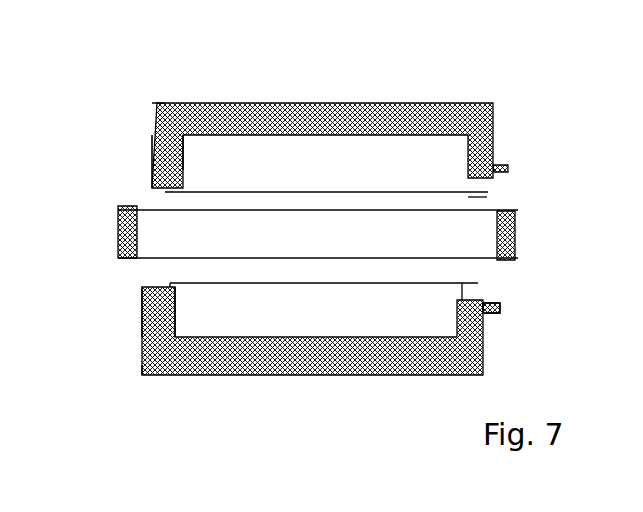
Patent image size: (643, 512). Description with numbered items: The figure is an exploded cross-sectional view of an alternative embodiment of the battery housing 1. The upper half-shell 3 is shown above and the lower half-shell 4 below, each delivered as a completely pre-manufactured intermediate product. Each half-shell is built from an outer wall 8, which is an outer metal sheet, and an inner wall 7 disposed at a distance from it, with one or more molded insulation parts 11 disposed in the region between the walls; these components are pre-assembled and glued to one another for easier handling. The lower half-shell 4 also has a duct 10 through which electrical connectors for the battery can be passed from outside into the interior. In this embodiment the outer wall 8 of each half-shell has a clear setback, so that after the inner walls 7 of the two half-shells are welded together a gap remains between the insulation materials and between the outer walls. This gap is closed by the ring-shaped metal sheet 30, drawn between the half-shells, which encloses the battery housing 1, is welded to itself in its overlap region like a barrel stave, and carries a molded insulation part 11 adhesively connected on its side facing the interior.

The battery housing 1 is at (518, 87).
The upper half-shell 3 is at (418, 104).
The lower half-shell 4 is at (413, 377).
The inner wall 7 is at (155, 172).
The outer wall 8 is at (152, 125).
The duct 10 is at (487, 330).
The molded insulation part 11 is at (282, 103).
The ring-shaped metal sheet 30 is at (117, 231).